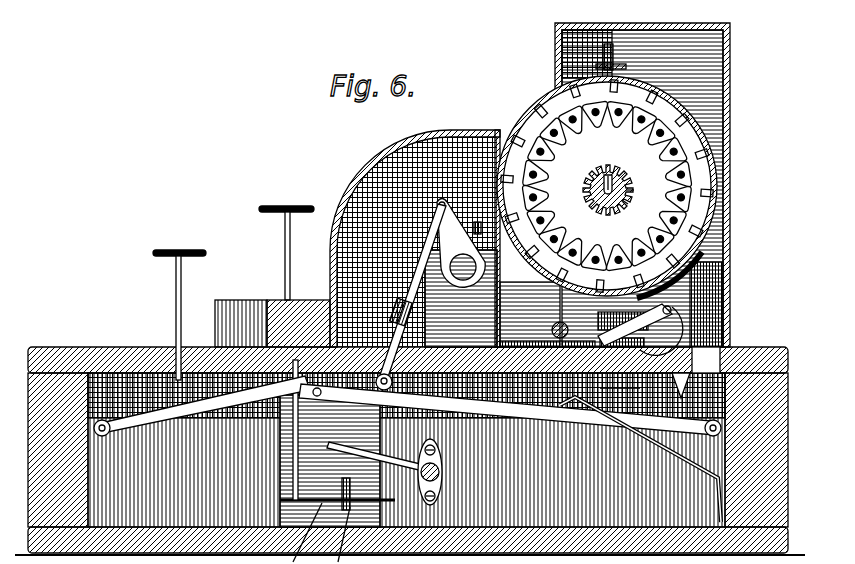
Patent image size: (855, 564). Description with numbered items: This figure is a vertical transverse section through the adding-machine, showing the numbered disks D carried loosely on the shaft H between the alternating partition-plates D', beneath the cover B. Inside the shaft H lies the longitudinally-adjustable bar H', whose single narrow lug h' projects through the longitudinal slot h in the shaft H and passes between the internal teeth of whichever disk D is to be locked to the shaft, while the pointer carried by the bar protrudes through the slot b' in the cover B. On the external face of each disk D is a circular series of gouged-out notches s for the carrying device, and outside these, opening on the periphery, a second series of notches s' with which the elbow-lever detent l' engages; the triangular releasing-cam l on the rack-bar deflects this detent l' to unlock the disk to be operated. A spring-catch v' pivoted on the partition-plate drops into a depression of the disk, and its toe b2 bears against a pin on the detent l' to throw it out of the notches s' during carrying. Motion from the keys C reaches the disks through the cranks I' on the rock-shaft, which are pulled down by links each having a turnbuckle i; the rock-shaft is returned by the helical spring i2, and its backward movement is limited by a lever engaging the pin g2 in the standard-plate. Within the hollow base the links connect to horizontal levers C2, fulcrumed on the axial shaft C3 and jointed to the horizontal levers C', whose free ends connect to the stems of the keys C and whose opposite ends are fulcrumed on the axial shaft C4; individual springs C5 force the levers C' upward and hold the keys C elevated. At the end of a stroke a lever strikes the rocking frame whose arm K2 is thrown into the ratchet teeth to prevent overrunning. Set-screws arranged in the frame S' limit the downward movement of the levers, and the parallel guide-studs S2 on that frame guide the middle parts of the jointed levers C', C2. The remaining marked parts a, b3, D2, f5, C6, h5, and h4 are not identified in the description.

The cover B is at (478, 132).
The slot b' is at (562, 54).
The arm K2 is at (614, 66).
The frame S' is at (614, 72).
The partition-plates D' is at (642, 188).
The numbered disks D is at (607, 186).
The hub slot a is at (602, 178).
The lug h' is at (619, 165).
The adjustable bar H' is at (643, 187).
The slot h is at (638, 208).
The shaft H is at (608, 203).
The notches s is at (612, 186).
The notches s' is at (606, 187).
The spring-catch v' is at (704, 275).
The toe b2 is at (672, 306).
The detent l' is at (701, 331).
The hatched bar b3 is at (623, 340).
The plate D2 is at (618, 390).
The turnbuckle i is at (690, 388).
The pin g2 is at (535, 340).
The roller f5 is at (552, 326).
The partition C6 is at (461, 298).
The cranks I' is at (461, 243).
The helical spring i2 is at (482, 220).
The releasing-cam l is at (406, 290).
The keys C is at (241, 293).
The guide-studs S2 is at (337, 461).
The horizontal levers C2 is at (205, 404).
The axial shaft C3 is at (93, 430).
The horizontal levers C' is at (506, 404).
The axial shaft C4 is at (722, 428).
The springs C5 is at (628, 430).
The rod h5 is at (380, 449).
The link h4 is at (445, 475).